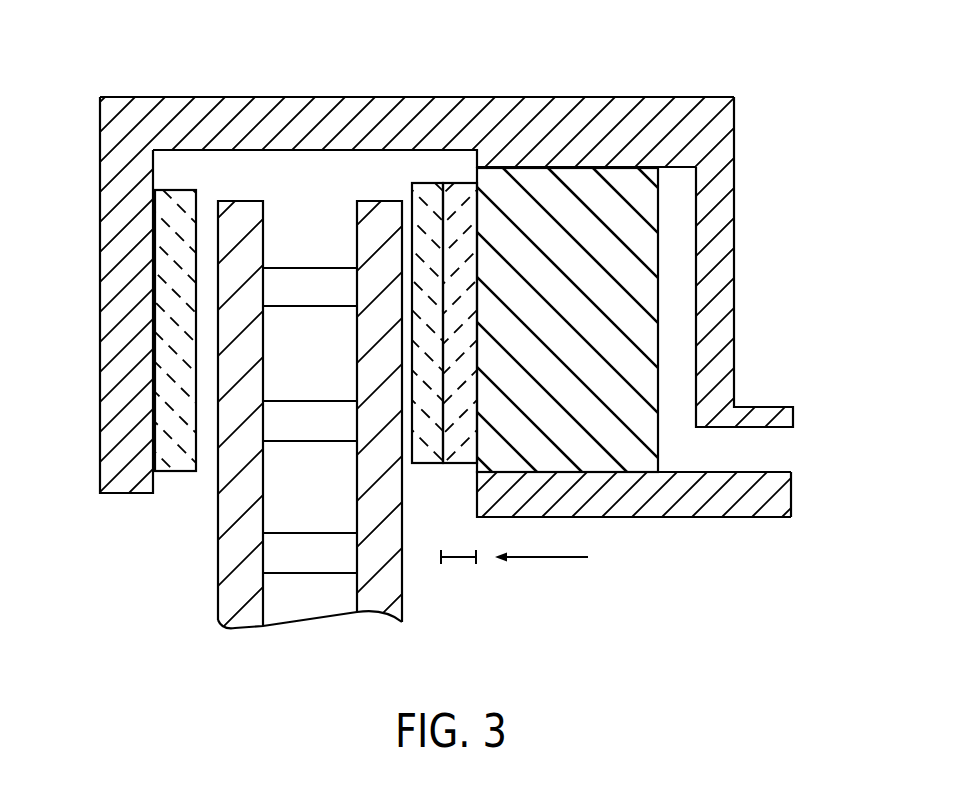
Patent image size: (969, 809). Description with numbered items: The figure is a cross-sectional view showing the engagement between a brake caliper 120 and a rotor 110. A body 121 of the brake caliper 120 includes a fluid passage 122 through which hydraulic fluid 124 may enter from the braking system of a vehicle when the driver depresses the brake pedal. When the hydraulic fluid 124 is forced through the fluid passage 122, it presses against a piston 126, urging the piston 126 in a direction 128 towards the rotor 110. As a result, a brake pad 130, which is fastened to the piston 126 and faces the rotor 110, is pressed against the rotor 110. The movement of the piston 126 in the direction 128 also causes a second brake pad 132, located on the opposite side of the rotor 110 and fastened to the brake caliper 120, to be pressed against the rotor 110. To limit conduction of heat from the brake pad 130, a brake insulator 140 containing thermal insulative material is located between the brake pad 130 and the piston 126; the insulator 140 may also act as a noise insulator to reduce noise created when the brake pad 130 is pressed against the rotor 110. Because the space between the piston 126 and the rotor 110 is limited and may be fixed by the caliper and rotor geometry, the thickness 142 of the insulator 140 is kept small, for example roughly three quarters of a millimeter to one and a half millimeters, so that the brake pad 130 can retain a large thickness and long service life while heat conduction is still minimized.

The rotor 110 is at (227, 532).
The brake caliper 120 is at (484, 294).
The body 121 is at (233, 110).
The fluid passage 122 is at (742, 443).
The hydraulic fluid 124 is at (801, 461).
The piston 126 is at (577, 215).
The direction 128 is at (543, 557).
The brake pad 130 is at (430, 205).
The second brake pad 132 is at (178, 338).
The brake insulator 140 is at (463, 205).
The thickness 142 is at (455, 580).